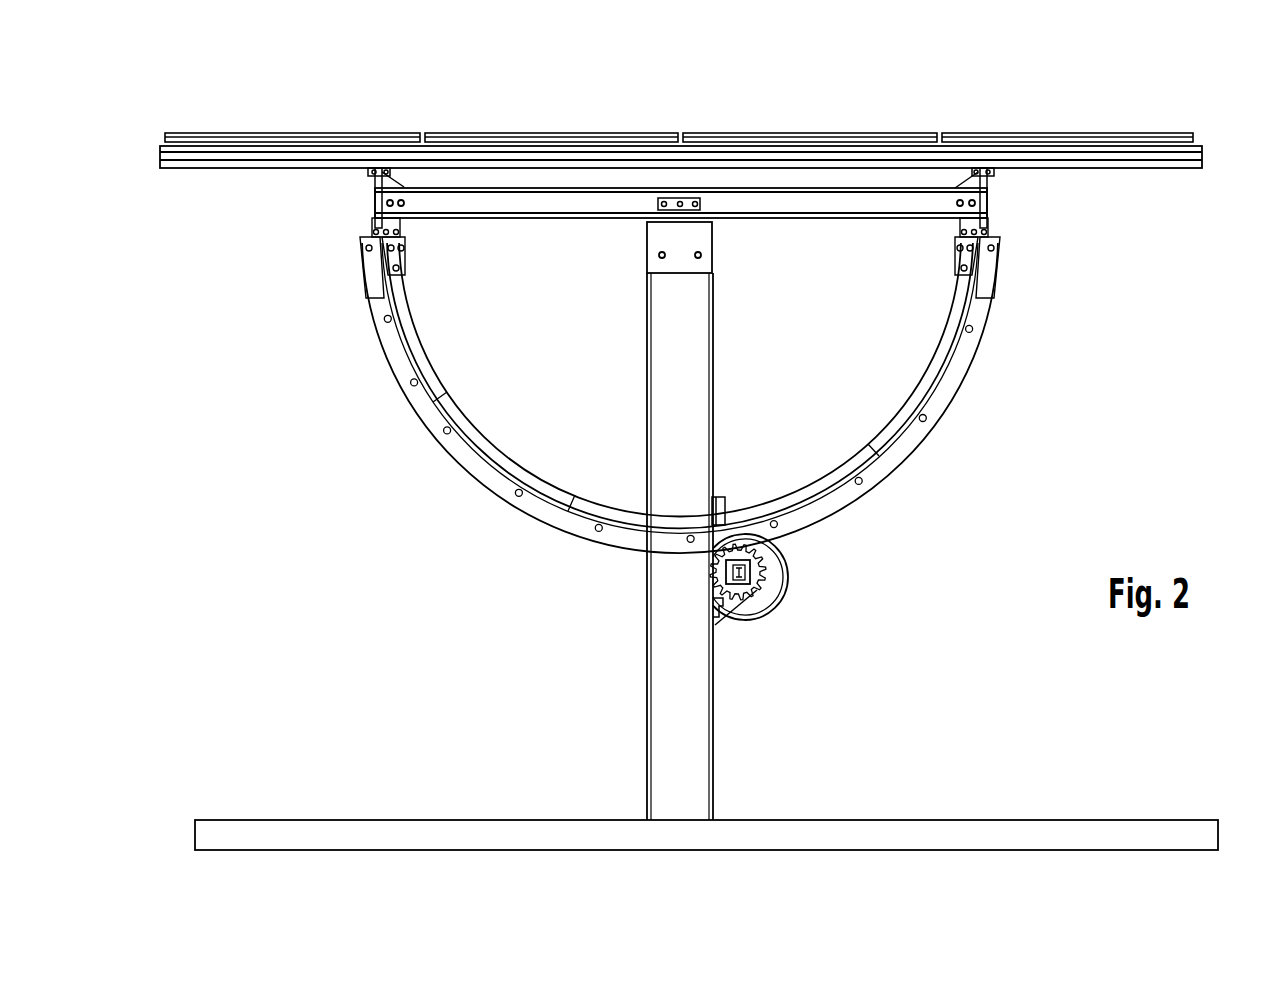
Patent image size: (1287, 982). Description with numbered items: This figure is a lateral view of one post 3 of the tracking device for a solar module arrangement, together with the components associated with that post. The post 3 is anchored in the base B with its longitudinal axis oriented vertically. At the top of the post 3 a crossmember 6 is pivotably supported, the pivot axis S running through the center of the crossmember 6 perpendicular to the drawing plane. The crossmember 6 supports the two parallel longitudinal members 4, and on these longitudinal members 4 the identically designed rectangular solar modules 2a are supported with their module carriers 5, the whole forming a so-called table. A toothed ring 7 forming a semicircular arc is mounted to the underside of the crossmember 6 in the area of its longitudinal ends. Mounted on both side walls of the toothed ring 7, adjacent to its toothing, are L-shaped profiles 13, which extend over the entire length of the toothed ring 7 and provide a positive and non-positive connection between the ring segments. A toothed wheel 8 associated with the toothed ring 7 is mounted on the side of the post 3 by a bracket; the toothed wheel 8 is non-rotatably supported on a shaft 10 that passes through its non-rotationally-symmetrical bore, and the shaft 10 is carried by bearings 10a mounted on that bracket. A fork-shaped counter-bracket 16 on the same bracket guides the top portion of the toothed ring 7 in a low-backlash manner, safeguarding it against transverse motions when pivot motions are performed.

The solar module 2a is at (296, 133).
The module carrier 5 is at (1203, 150).
The longitudinal member 4 is at (385, 180).
The crossmember 6 is at (838, 205).
The pivot axis S is at (680, 204).
The post 3 is at (698, 758).
The toothed ring 7 is at (855, 442).
The L-shaped profile 13 is at (958, 366).
The fork-shaped counter-bracket 16 is at (727, 497).
The toothed wheel 8 is at (717, 572).
The shaft 10 is at (750, 578).
The bearing 10a is at (773, 567).
The base B is at (988, 828).